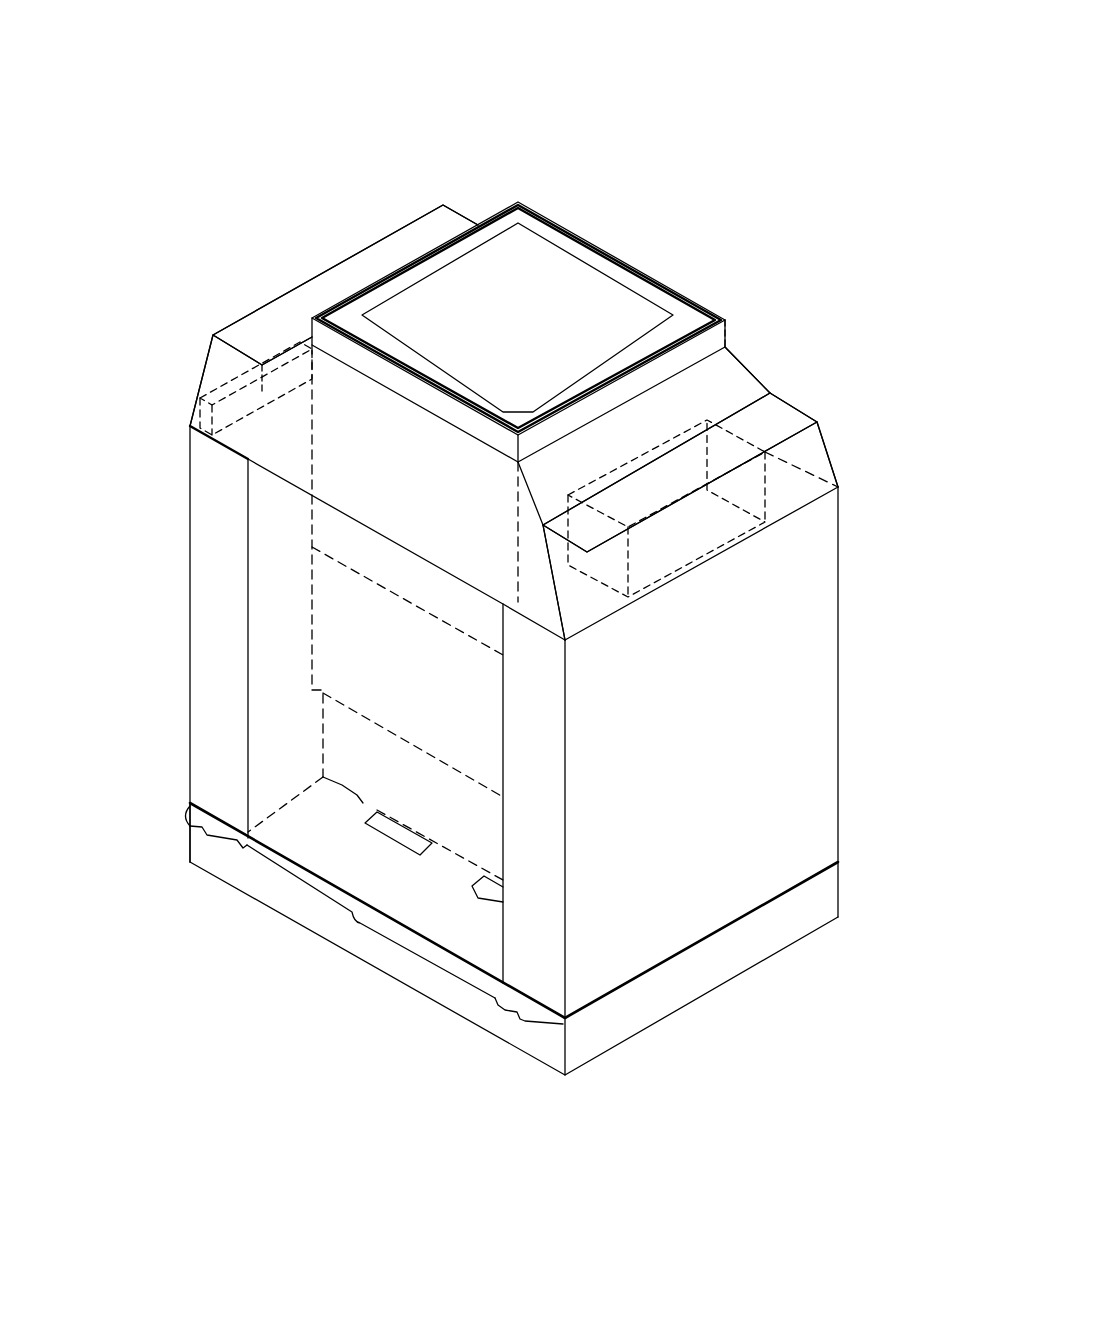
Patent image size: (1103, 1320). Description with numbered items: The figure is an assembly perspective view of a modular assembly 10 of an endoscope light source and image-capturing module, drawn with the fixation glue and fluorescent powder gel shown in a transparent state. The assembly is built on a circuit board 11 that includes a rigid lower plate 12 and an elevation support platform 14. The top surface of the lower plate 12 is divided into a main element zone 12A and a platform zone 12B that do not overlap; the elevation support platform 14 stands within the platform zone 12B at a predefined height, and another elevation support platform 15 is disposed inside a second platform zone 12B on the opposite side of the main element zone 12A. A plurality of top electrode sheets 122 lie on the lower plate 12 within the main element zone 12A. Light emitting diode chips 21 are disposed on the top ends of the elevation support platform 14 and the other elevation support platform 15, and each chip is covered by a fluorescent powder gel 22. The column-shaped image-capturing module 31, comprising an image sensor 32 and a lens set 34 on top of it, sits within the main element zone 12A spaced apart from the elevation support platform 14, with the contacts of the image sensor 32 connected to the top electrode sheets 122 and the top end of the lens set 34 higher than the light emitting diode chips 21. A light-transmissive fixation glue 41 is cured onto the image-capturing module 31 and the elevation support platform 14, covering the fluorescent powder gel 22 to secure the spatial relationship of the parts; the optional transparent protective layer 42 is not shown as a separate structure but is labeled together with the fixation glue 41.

The modular assembly 10 is at (730, 96).
The circuit board 11 is at (84, 713).
The elevation support platform 14 is at (190, 705).
The lower plate 12 is at (190, 832).
The main element zone 12A is at (352, 912).
The platform zone 12B is at (195, 840).
The another elevation support platform 15 is at (838, 690).
The light emitting diode chips 21 is at (300, 393).
The fluorescent powder gel 22 is at (328, 282).
The image-capturing module 31 is at (616, 248).
The image sensor 32 is at (340, 743).
The lens set 34 is at (530, 268).
The fixation glue 41 is at (752, 368).
The transparent protective layer 42 is at (554, 582).
The top electrode sheets 122 is at (375, 832).